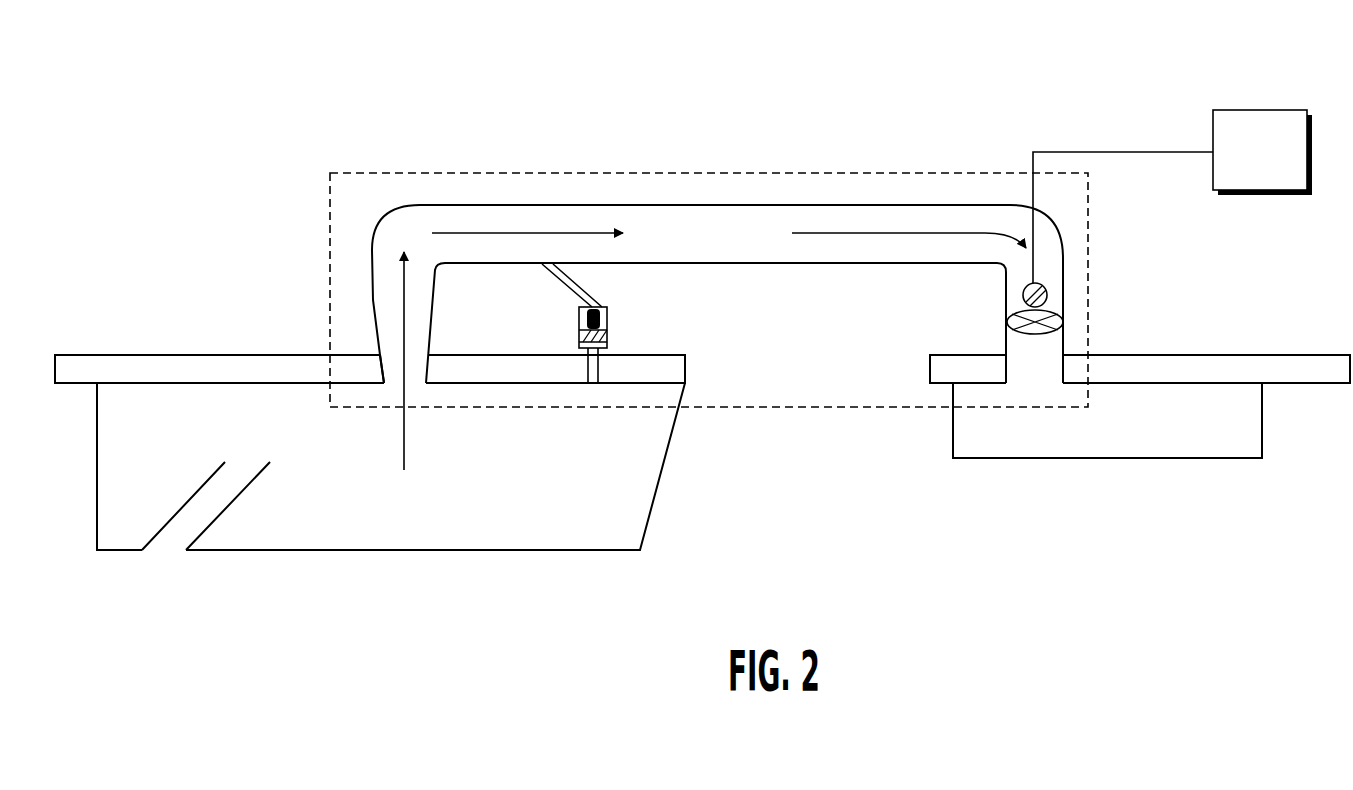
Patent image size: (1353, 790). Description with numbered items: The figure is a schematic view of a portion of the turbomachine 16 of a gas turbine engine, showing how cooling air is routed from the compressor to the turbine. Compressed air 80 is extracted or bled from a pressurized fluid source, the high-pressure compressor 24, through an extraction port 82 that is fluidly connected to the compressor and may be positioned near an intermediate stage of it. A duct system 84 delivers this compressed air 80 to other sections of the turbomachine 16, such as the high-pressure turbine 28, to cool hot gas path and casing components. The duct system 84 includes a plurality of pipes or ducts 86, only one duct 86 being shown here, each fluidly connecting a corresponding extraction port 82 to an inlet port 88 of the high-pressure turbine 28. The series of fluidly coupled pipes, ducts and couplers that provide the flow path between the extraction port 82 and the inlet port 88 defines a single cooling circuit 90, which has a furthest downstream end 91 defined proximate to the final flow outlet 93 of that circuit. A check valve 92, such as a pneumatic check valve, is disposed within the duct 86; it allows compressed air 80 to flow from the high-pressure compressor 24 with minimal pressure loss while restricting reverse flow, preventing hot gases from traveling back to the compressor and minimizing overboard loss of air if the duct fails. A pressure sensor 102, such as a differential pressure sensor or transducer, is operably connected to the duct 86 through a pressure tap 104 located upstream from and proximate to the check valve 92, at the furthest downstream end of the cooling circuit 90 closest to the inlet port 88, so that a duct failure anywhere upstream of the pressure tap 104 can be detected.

The turbomachine 16 is at (510, 137).
The high-pressure compressor 24 is at (165, 355).
The high-pressure turbine 28 is at (1248, 355).
The compressed air 80 is at (392, 507).
The extraction port 82 is at (375, 348).
The duct system 84 is at (812, 137).
The duct 86 is at (660, 205).
The inlet port 88 is at (1045, 355).
The cooling circuit 90 is at (903, 172).
The furthest downstream end 91 is at (1000, 350).
The check valve 92 is at (1047, 323).
The final flow outlet 93 is at (1062, 388).
The pressure sensor 102 is at (1245, 167).
The pressure tap 104 is at (1042, 284).